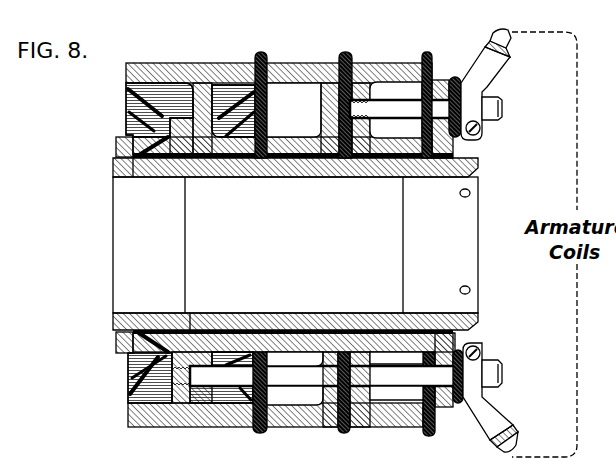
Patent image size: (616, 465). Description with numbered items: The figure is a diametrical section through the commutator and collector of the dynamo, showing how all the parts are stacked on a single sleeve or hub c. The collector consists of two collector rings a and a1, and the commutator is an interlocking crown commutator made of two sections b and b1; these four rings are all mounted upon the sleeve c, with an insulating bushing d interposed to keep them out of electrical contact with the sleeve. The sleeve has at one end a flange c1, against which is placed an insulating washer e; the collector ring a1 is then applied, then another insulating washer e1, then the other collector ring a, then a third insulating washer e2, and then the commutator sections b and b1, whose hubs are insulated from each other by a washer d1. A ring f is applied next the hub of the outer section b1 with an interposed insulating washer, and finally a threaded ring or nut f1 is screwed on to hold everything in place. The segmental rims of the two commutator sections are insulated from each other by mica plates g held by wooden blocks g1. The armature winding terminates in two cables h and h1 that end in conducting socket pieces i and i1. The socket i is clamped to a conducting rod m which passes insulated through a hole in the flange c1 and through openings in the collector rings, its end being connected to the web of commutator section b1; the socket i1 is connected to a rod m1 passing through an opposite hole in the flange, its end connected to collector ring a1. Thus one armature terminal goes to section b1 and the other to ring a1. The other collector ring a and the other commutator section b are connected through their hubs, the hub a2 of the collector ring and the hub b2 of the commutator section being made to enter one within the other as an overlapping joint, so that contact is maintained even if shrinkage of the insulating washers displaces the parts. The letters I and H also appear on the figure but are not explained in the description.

The field magnet / top plate I is at (279, 59).
The commutator section b is at (248, 96).
The central disc H is at (341, 94).
The insulating washer e is at (429, 245).
The cable h1 is at (511, 40).
The conducting socket piece i1 is at (492, 77).
The flange c1 is at (455, 147).
The wooden blocks g1 is at (128, 106).
The hub of collector ring a2 is at (297, 143).
The rod m1 is at (413, 107).
The mica plates g is at (87, 299).
The ring f is at (137, 158).
The insulating washer d1 is at (199, 143).
The hub of commutator section b2 is at (258, 142).
The sleeve or hub c is at (295, 244).
The insulating bushing d is at (231, 330).
The threaded ring or nut f1 is at (114, 342).
The commutator section b1 is at (275, 431).
The insulating washer e2 is at (264, 407).
The collector ring a is at (308, 430).
The conducting rod m is at (320, 368).
The insulating washer e1 is at (349, 407).
The collector ring a1 is at (402, 427).
The conducting socket piece i is at (504, 419).
The cable h is at (515, 432).